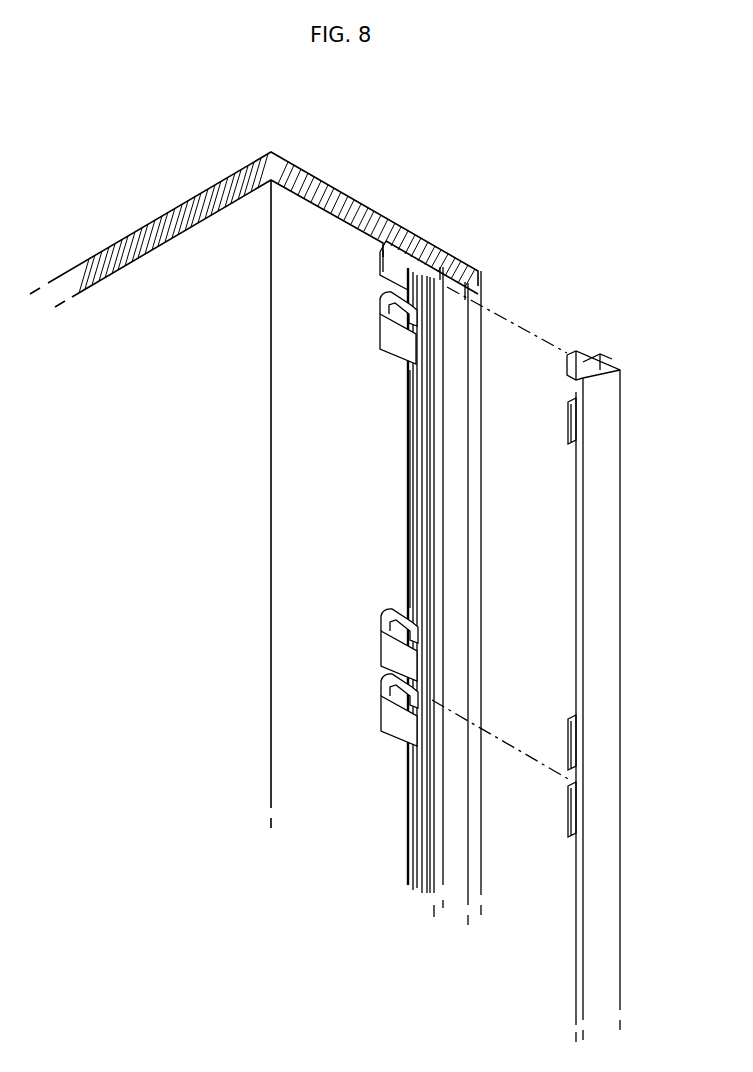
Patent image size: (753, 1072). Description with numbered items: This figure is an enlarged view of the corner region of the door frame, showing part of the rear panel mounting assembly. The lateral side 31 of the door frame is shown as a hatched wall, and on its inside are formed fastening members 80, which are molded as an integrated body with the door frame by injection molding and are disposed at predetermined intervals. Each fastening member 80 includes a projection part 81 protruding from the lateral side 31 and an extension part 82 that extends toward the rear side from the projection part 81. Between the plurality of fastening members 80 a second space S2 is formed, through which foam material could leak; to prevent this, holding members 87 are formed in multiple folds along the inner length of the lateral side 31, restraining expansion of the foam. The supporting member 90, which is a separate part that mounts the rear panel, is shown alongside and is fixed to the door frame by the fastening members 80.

The lateral side 31 is at (333, 232).
The projection part 81 is at (383, 253).
The fastening member 80 is at (361, 536).
The extension part 82 is at (395, 356).
The second space S2 is at (405, 465).
The holding member 87 is at (425, 528).
The supporting member 90 is at (600, 652).